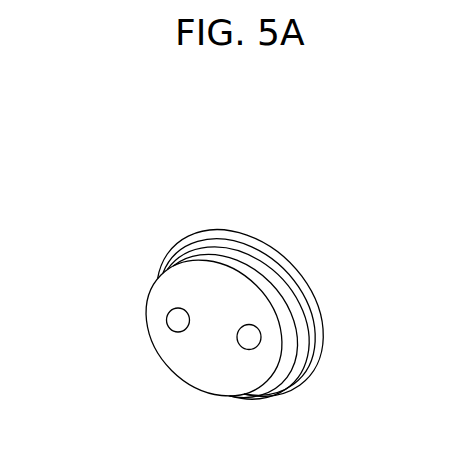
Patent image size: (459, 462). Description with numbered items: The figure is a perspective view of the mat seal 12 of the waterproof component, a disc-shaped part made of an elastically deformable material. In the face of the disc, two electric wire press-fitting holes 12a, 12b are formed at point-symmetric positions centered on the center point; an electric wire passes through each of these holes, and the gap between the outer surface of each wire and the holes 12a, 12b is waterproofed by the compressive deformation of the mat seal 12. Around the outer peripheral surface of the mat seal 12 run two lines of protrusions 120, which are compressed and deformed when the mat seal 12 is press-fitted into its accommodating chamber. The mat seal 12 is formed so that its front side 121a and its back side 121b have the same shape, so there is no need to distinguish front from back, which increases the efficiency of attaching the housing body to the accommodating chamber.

The mat seal 12 is at (256, 186).
The protrusions 120 is at (200, 230).
The front side 121a is at (215, 303).
The back side 121b is at (317, 278).
The electric wire press-fitting hole 12a is at (178, 321).
The electric wire press-fitting hole 12b is at (250, 337).